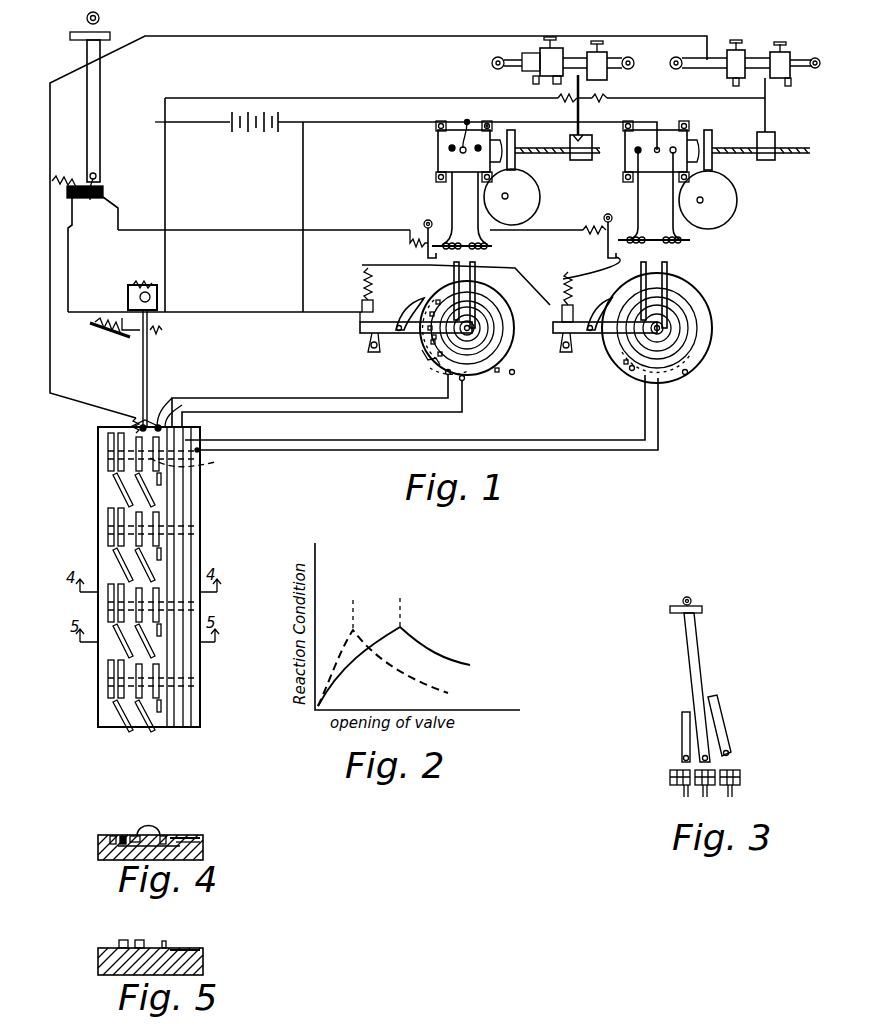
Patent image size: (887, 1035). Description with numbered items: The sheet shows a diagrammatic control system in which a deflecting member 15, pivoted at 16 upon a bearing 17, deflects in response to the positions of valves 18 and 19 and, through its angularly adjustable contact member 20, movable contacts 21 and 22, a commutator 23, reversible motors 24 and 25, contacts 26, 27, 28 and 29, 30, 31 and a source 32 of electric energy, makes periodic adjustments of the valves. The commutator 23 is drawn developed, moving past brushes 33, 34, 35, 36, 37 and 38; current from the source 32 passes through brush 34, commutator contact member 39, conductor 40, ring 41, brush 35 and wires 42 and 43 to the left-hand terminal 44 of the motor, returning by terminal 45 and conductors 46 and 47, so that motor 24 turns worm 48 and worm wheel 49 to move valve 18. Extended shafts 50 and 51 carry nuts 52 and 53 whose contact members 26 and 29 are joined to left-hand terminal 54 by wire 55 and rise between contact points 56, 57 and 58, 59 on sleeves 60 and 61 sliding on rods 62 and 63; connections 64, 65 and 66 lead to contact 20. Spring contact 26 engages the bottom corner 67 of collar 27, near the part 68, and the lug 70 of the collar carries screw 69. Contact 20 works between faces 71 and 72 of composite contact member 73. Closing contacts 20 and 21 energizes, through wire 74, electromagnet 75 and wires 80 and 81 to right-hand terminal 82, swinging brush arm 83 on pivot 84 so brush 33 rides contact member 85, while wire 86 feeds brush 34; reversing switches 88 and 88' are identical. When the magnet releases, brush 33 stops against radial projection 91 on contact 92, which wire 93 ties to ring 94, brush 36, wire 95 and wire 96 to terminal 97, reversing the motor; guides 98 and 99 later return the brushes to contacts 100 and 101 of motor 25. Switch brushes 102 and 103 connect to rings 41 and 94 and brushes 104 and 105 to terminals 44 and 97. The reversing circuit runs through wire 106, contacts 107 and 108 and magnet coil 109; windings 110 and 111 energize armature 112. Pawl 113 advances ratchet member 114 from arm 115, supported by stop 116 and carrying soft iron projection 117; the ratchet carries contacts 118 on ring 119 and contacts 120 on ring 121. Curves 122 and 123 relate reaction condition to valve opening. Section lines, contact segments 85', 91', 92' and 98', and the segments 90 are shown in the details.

In FIG. 1, the deflecting member 15 is at (101, 84).
In FIG. 3, the deflecting member 15 is at (700, 672).
In FIG. 1, the pivot 16 is at (100, 17).
In FIG. 1, the bearing 17 is at (110, 36).
In FIG. 1, the valve 18 is at (508, 196).
In FIG. 1, the valve 19 is at (703, 200).
In FIG. 1, the contact member 20 is at (92, 202).
In FIG. 3, the contact member 20 is at (732, 762).
In FIG. 1, the upper contact 21 is at (67, 192).
In FIG. 3, the upper contact 21 is at (740, 775).
In FIG. 1, the lower contact 22 is at (104, 197).
In FIG. 3, the lower contact 22 is at (738, 788).
In FIG. 1, the commutator 23 is at (118, 728).
In FIG. 1, the reversible motor 24 is at (438, 166).
In FIG. 1, the reversible motor 25 is at (625, 176).
In FIG. 1, the contact member 26 is at (578, 78).
In FIG. 1, the collar member 27 is at (580, 60).
In FIG. 1, the collar member 28 is at (600, 62).
In FIG. 1, the contact member 29 is at (765, 82).
In FIG. 1, the contact 30 is at (745, 55).
In FIG. 1, the contact 31 is at (790, 58).
In FIG. 1, the source of electric energy 32 is at (246, 132).
In FIG. 1, the brush 33 is at (130, 426).
In FIG. 4, the brush 33 is at (134, 836).
In FIG. 1, the brush 34 is at (166, 410).
In FIG. 4, the brush 34 is at (166, 836).
In FIG. 1, the brush 35 is at (178, 412).
In FIG. 1, the brush 36 is at (183, 428).
In FIG. 1, the brush 37 is at (190, 440).
In FIG. 1, the brush 38 is at (200, 452).
In FIG. 1, the commutator contact member 39 is at (172, 470).
In FIG. 4, the commutator contact member 39 is at (176, 836).
In FIG. 1, the commutator conductor 40 is at (235, 470).
In FIG. 1, the commutator ring 41 is at (176, 495).
In FIG. 4, the commutator ring 41 is at (186, 836).
In FIG. 5, the commutator ring 41 is at (180, 946).
In FIG. 1, the wire connection 42 is at (256, 398).
In FIG. 1, the wire connection 43 is at (452, 200).
In FIG. 1, the left-hand motor terminal 44 is at (438, 145).
In FIG. 1, the motor terminal 45 is at (463, 153).
In FIG. 1, the conductor 46 is at (466, 122).
In FIG. 1, the conductor 47 is at (347, 120).
In FIG. 1, the worm 48 is at (515, 137).
In FIG. 1, the worm wheel 49 is at (539, 208).
In FIG. 1, the extended shaft 50 is at (552, 156).
In FIG. 1, the extended shaft 51 is at (790, 155).
In FIG. 1, the nut 52 is at (578, 162).
In FIG. 1, the nut 53 is at (765, 162).
In FIG. 1, the left-hand terminal 54 is at (149, 123).
In FIG. 1, the wire 55 is at (360, 98).
In FIG. 1, the contact point 56 is at (560, 100).
In FIG. 1, the contact point 57 is at (600, 100).
In FIG. 1, the contact point 58 is at (740, 86).
In FIG. 1, the contact point 59 is at (788, 86).
In FIG. 1, the contact sleeve 60 is at (540, 52).
In FIG. 1, the contact sleeve 61 is at (708, 40).
In FIG. 1, the stationary rod 62 is at (495, 58).
In FIG. 1, the stationary rod 63 is at (674, 70).
In FIG. 1, the connection 64 is at (548, 38).
In FIG. 1, the connection 65 is at (296, 38).
In FIG. 1, the connection 66 is at (55, 178).
In FIG. 1, the bottom corner 67 is at (595, 46).
In FIG. 1, the contact 68 is at (553, 78).
In FIG. 1, the screw 69 is at (545, 78).
In FIG. 1, the lug 70 is at (533, 80).
In FIG. 3, the slot face 71 is at (672, 788).
In FIG. 3, the slot face 72 is at (683, 792).
In FIG. 3, the composite contact member 73 is at (670, 777).
In FIG. 1, the wire 74 is at (70, 250).
In FIG. 1, the electromagnet 75 is at (92, 335).
In FIG. 1, the wire 80 is at (212, 312).
In FIG. 1, the wire 81 is at (304, 190).
In FIG. 1, the right-hand terminal 82 is at (295, 122).
In FIG. 1, the pivoted brush arm 83 is at (143, 378).
In FIG. 4, the pivoted brush arm 83 is at (148, 824).
In FIG. 1, the pivot 84 is at (128, 300).
In FIG. 1, the commutator contact member 85 is at (77, 564).
In FIG. 4, the contact segment 85' is at (88, 829).
In FIG. 1, the wire 86 is at (166, 272).
In FIG. 1, the reversing switch 88 is at (482, 328).
In FIG. 1, the reversing switch 88' is at (672, 328).
In FIG. 1, the contact segment 90 is at (118, 455).
In FIG. 1, the radial projection 91 is at (116, 561).
In FIG. 4, the connection 91' is at (111, 825).
In FIG. 1, the commutator contact 92 is at (96, 597).
In FIG. 4, the insulating plate 92' is at (131, 847).
In FIG. 1, the commutator wire 93 is at (136, 460).
In FIG. 1, the commutator ring 94 is at (185, 508).
In FIG. 4, the commutator ring 94 is at (200, 838).
In FIG. 5, the commutator ring 94 is at (200, 950).
In FIG. 1, the wire 95 is at (292, 412).
In FIG. 1, the wire 96 is at (471, 208).
In FIG. 1, the motor terminal 97 is at (492, 128).
In FIG. 1, the guide 98 is at (122, 572).
In FIG. 5, the connection 98' is at (117, 934).
In FIG. 1, the guide 99 is at (136, 520).
In FIG. 5, the guide 99 is at (145, 934).
In FIG. 1, the commutator contact 100 is at (153, 528).
In FIG. 1, the commutator contact 101 is at (158, 538).
In FIG. 1, the switch brush 102 is at (445, 380).
In FIG. 1, the switch brush 103 is at (464, 381).
In FIG. 1, the switch brush 104 is at (480, 282).
In FIG. 1, the switch brush 105 is at (515, 305).
In FIG. 1, the wire 106 is at (236, 232).
In FIG. 1, the pivoted contact member 107 is at (412, 244).
In FIG. 1, the contact member 108 is at (415, 266).
In FIG. 1, the electrical magnet coil 109 is at (365, 291).
In FIG. 1, the winding 110 is at (425, 230).
In FIG. 1, the winding 111 is at (486, 248).
In FIG. 1, the armature 112 is at (488, 244).
In FIG. 1, the pawl 113 is at (406, 318).
In FIG. 1, the ratchet member 114 is at (422, 356).
In FIG. 1, the arm 115 is at (360, 332).
In FIG. 1, the stationary stop 116 is at (368, 350).
In FIG. 1, the soft iron projection 117 is at (360, 325).
In FIG. 1, the contacts 118 is at (446, 374).
In FIG. 1, the conducting ring 119 is at (496, 328).
In FIG. 1, the contacts 120 is at (432, 338).
In FIG. 1, the conducting ring 121 is at (500, 370).
In FIG. 2, the curve 122 is at (405, 675).
In FIG. 2, the curve 123 is at (412, 636).